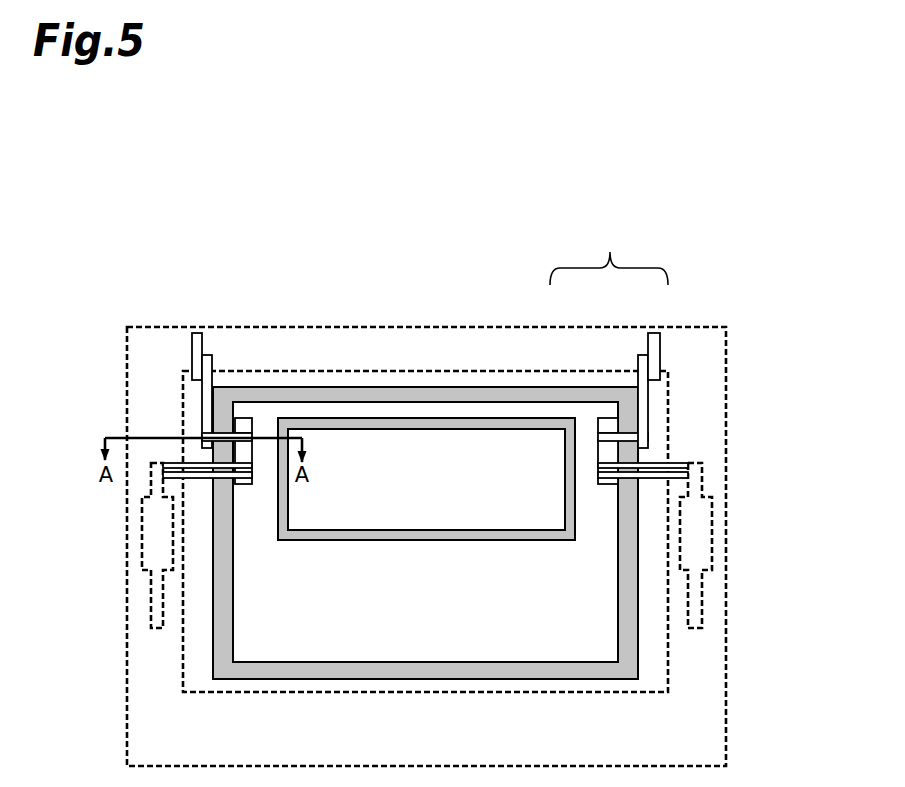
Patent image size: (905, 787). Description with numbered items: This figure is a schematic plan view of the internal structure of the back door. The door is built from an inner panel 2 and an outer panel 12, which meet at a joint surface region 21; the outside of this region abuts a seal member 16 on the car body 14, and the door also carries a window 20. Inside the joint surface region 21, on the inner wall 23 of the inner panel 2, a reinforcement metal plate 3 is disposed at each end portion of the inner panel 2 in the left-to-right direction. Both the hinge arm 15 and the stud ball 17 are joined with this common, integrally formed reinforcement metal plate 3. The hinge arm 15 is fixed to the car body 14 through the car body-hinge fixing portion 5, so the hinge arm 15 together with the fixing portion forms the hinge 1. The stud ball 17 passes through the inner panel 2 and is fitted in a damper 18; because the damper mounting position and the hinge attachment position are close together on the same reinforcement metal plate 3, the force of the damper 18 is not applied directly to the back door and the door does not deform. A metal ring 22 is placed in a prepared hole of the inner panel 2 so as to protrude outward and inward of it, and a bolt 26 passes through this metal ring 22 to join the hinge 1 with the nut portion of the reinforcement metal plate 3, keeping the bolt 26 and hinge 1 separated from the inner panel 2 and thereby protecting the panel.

The hinge 1 is at (609, 252).
The inner panel 2 is at (438, 652).
The reinforcement metal plate 3 is at (607, 423).
The car body-hinge fixing portion 5 is at (652, 342).
The outer panel 12 is at (513, 635).
The car body 14 is at (367, 358).
The hinge arm 15 is at (638, 362).
The seal member 16 is at (661, 417).
The stud ball 17 is at (655, 470).
The damper 18 is at (703, 528).
The window 20 is at (370, 462).
The joint surface region 21 is at (487, 423).
The metal ring 22 is at (222, 428).
The inner wall 23 is at (617, 518).
The bolt 26 is at (240, 436).